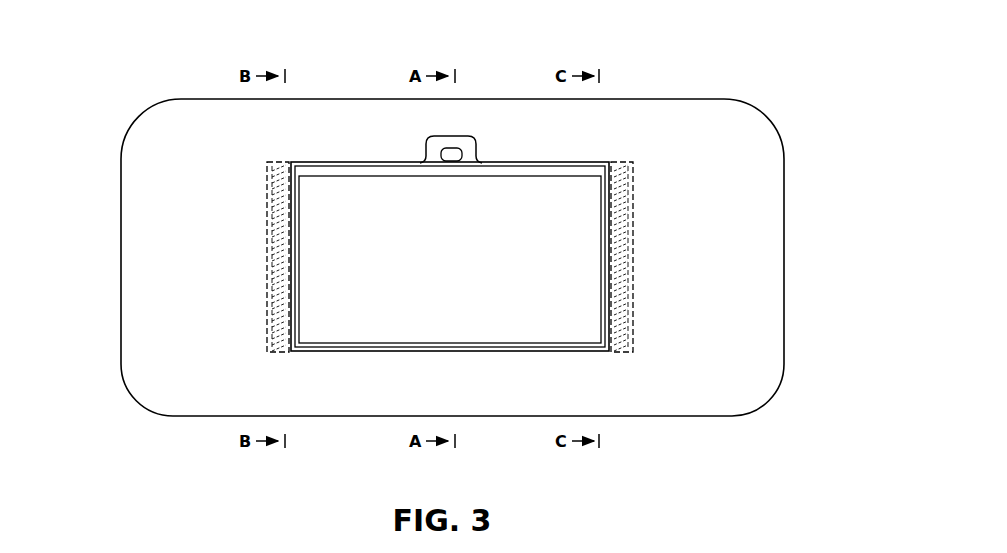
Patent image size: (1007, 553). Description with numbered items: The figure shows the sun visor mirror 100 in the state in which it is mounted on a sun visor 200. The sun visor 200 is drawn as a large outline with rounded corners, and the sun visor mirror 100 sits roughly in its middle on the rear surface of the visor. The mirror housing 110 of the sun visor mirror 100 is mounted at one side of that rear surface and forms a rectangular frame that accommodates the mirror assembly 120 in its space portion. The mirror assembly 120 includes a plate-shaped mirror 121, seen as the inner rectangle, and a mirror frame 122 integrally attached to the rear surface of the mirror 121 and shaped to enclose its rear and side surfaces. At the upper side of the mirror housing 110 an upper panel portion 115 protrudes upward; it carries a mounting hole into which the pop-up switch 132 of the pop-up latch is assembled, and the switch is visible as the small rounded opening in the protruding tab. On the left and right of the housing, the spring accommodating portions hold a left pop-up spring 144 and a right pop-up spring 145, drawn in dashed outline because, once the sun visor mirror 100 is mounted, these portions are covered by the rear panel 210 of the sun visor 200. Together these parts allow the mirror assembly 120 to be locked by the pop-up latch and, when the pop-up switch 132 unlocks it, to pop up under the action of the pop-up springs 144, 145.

The sun visor 200 is at (704, 94).
The rear panel 210 is at (735, 163).
The sun visor mirror 100 is at (336, 156).
The mirror housing 110 is at (606, 162).
The upper panel portion 115 is at (462, 145).
The pop-up switch 132 is at (446, 152).
The mirror assembly 120 is at (329, 349).
The mirror 121 is at (388, 332).
The mirror frame 122 is at (496, 344).
The left pop-up spring 144 is at (268, 203).
The right pop-up spring 145 is at (632, 207).